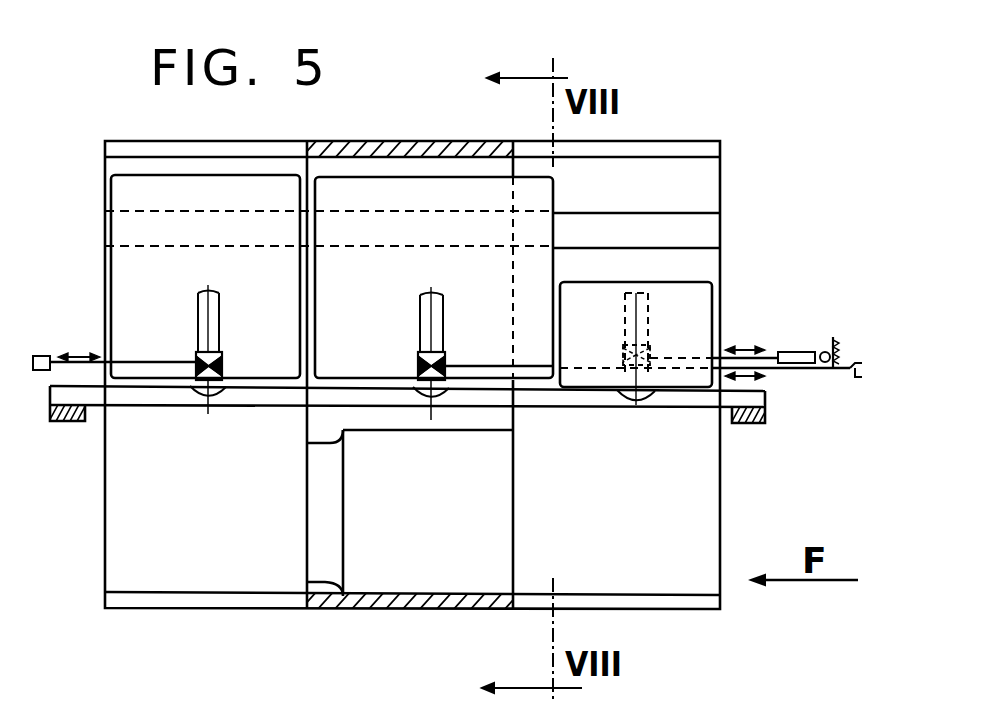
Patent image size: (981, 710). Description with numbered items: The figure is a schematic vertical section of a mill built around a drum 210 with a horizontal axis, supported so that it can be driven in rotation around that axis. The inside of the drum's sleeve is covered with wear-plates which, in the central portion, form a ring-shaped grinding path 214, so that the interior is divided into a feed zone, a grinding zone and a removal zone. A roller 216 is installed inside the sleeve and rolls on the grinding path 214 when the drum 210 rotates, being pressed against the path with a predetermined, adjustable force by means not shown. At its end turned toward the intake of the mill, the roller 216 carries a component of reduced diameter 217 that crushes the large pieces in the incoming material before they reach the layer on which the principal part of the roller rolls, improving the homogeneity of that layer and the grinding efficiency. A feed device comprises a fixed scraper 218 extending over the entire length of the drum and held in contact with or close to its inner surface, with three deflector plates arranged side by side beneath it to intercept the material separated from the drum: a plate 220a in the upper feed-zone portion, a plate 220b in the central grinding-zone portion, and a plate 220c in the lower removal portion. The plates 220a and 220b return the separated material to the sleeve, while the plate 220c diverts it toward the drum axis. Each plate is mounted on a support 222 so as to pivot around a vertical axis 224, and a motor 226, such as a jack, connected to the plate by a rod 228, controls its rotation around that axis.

The drum 210 is at (187, 594).
The ring-shaped grinding path 214 is at (397, 609).
The roller 216 is at (493, 582).
The component of reduced diameter 217 is at (322, 568).
The fixed scraper 218 is at (707, 228).
The deflector plate 220a is at (205, 282).
The deflector plate 220b is at (403, 282).
The deflector plate 220c is at (620, 311).
The support 222 is at (763, 403).
The vertical axis 224 is at (208, 413).
The motor 226 is at (796, 365).
The rod 228 is at (773, 353).